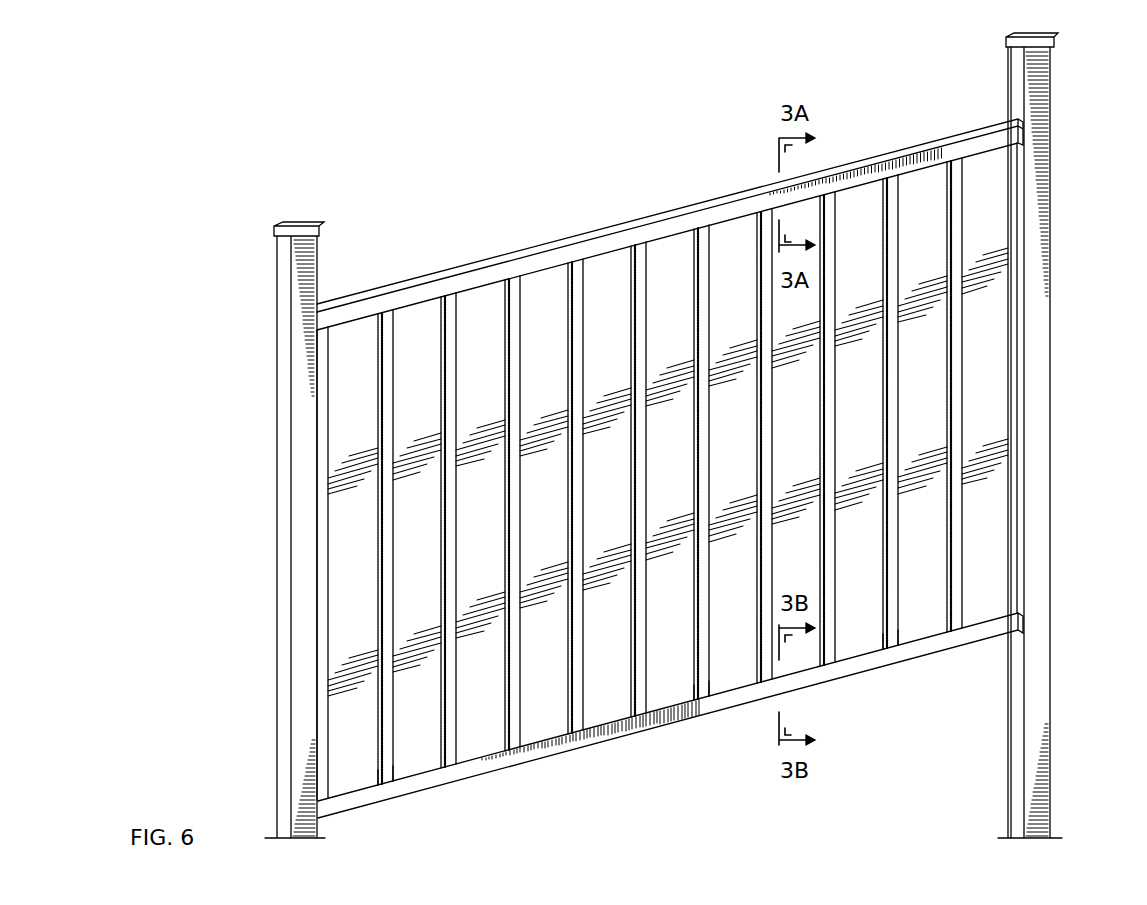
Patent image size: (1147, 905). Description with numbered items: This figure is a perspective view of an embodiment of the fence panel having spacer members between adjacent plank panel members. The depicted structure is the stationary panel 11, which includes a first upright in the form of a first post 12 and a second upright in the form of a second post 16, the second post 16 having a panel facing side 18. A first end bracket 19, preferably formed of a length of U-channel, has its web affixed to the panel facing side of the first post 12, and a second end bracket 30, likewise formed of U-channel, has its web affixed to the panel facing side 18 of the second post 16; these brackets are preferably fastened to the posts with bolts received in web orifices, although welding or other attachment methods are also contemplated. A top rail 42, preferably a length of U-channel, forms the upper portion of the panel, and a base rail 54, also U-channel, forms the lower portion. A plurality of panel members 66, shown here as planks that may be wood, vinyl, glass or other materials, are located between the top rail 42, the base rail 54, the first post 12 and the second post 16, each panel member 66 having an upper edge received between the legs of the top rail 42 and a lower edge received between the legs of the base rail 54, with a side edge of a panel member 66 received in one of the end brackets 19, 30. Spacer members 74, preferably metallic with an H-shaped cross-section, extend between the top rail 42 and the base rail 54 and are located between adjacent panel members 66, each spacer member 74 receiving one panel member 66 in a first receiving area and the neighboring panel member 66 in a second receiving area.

The stationary panel 11 is at (520, 143).
The first post 12 is at (280, 590).
The second post 16 is at (1053, 442).
The panel facing side 18 is at (1009, 68).
The first end bracket 19 is at (318, 418).
The second end bracket 30 is at (1013, 216).
The top rail 42 is at (532, 250).
The base rail 54 is at (846, 680).
The panel member 66 is at (362, 332).
The spacer member 74 is at (396, 762).